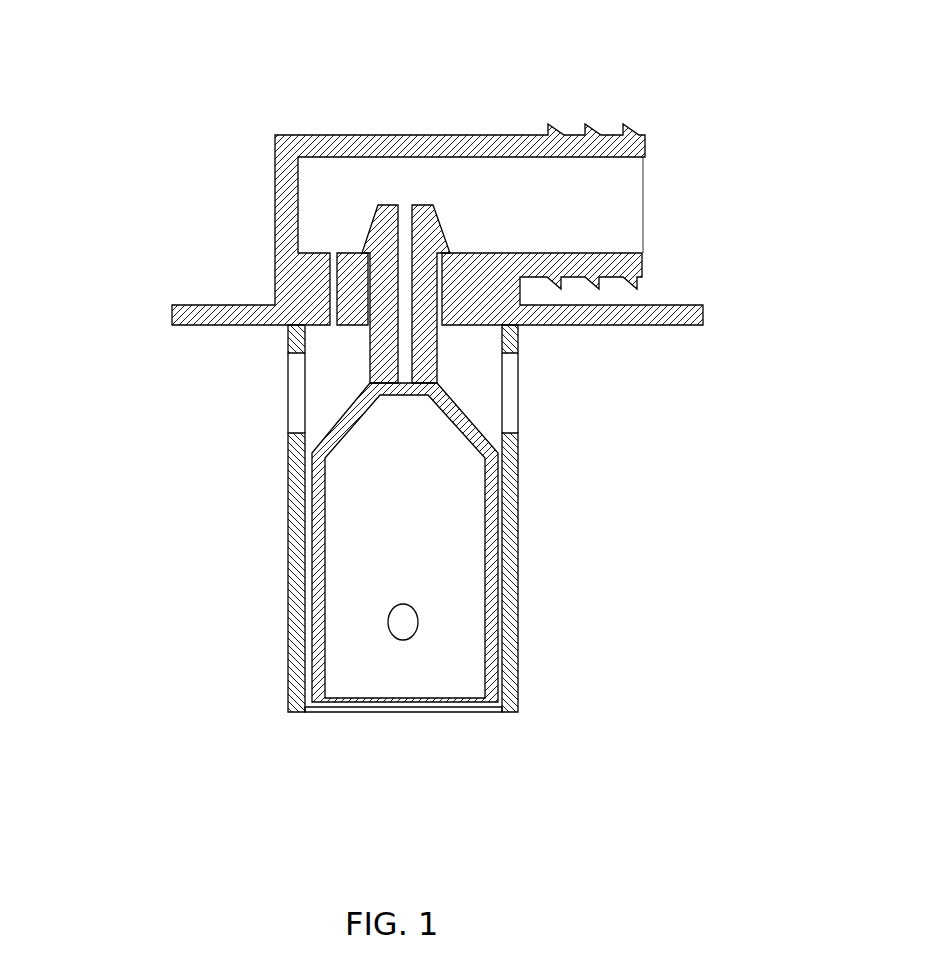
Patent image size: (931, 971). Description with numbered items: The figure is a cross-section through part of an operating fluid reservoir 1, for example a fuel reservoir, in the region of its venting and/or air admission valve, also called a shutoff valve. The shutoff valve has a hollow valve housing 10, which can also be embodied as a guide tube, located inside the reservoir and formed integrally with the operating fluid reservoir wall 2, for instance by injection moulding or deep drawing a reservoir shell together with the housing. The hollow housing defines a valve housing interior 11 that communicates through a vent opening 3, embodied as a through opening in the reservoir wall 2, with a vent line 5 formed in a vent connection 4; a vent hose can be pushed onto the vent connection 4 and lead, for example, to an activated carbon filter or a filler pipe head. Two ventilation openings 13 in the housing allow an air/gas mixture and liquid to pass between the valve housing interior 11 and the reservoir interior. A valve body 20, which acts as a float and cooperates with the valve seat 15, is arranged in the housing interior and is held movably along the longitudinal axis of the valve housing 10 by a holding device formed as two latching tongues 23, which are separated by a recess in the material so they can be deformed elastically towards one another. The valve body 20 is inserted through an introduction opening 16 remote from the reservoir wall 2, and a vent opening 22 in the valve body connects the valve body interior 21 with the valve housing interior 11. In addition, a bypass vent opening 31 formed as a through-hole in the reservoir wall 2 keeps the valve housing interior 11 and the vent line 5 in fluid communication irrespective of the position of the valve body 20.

The operating fluid reservoir 1 is at (160, 80).
The operating fluid reservoir wall 2 is at (225, 310).
The vent opening 3 is at (403, 278).
The vent connection 4 is at (581, 138).
The vent line 5 is at (624, 212).
The valve housing 10 is at (292, 636).
The valve housing interior 11 is at (332, 362).
The ventilation opening 13 is at (299, 417).
The valve seat 15 is at (470, 323).
The introduction opening 16 is at (347, 710).
The valve body 20 is at (491, 567).
The valve body interior 21 is at (442, 587).
The vent opening 22 is at (411, 639).
The latching tongue 23 is at (381, 215).
The bypass vent opening 31 is at (287, 329).